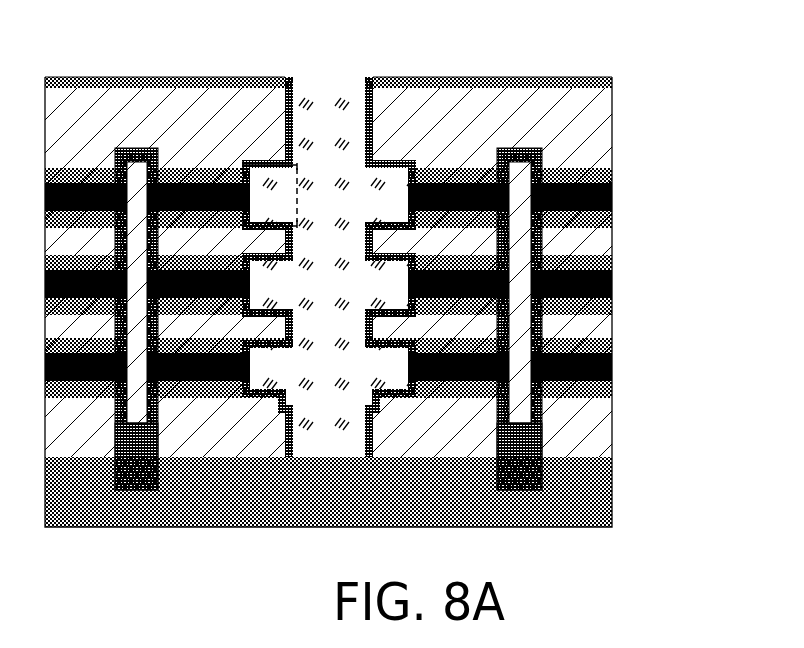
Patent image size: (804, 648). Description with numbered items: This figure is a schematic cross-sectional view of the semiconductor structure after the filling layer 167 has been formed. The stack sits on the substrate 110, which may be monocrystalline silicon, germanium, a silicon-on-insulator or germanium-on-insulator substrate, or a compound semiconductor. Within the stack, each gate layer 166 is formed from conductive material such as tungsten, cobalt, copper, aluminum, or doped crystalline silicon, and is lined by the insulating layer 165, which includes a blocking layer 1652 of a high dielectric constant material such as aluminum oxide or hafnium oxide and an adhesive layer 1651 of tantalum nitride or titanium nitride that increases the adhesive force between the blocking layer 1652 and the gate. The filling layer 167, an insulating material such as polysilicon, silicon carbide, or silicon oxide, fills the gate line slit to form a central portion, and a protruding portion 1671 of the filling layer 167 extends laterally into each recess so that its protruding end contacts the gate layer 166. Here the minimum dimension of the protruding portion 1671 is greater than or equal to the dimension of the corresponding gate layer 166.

The substrate 110 is at (612, 480).
The insulating layer 165 is at (414, 242).
The adhesive layer 1651 is at (612, 265).
The blocking layer 1652 is at (612, 221).
The gate layer 166 is at (612, 193).
The filling layer 167 is at (327, 100).
The protruding portion 1671 is at (265, 163).